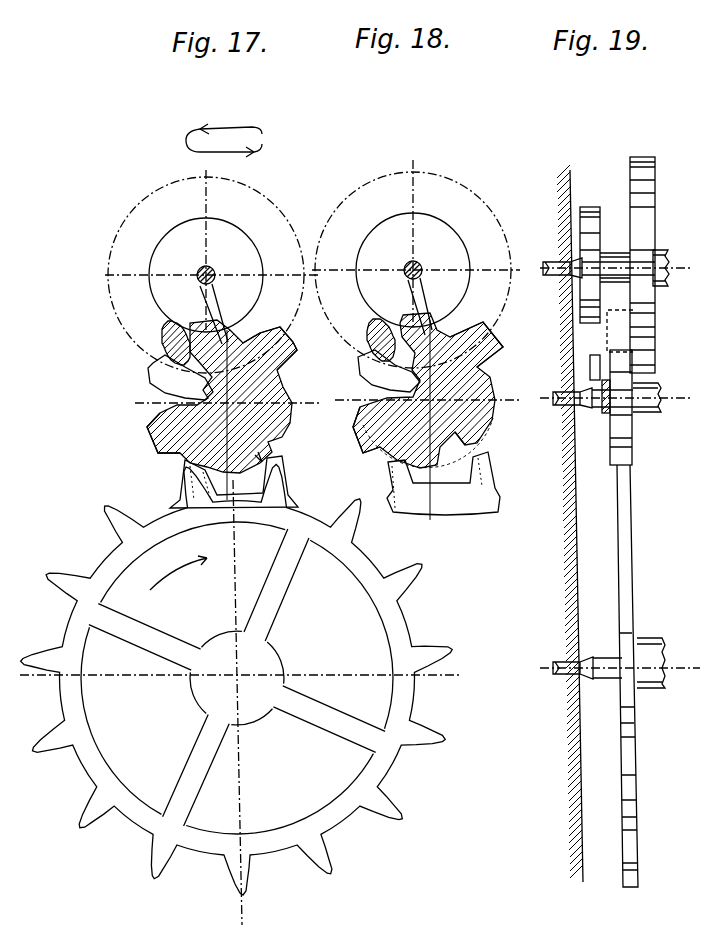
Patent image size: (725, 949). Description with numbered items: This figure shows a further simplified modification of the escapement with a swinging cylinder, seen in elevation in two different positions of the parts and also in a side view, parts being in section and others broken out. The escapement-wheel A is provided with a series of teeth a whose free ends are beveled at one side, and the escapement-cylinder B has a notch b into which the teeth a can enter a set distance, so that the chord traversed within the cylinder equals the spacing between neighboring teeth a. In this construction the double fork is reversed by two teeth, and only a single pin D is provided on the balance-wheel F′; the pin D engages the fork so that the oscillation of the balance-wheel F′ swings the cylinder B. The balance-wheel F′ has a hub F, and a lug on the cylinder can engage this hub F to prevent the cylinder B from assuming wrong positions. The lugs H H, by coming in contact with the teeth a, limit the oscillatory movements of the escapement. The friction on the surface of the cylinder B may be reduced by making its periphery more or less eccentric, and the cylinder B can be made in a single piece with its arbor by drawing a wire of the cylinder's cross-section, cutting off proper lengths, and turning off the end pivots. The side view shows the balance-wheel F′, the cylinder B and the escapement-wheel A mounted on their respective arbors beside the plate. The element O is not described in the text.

In FIG. 17, the escapement-wheel A is at (241, 695).
In FIG. 19, the escapement-wheel A is at (620, 676).
In FIG. 17, the teeth a is at (210, 498).
In FIG. 18, the teeth a is at (443, 483).
In FIG. 17, the escapement-cylinder B is at (227, 410).
In FIG. 18, the escapement-cylinder B is at (427, 416).
In FIG. 19, the escapement-cylinder B is at (615, 407).
In FIG. 17, the notch b is at (256, 468).
In FIG. 18, the notch b is at (457, 445).
In FIG. 17, the pin D is at (165, 343).
In FIG. 18, the pin D is at (373, 335).
In FIG. 19, the pin D is at (620, 331).
In FIG. 17, the hub F is at (211, 271).
In FIG. 18, the hub F is at (416, 264).
In FIG. 19, the balance-wheel F′ is at (615, 265).
In FIG. 17, the lugs H is at (229, 403).
In FIG. 18, the lugs H is at (429, 391).
In FIG. 17, the lever O is at (180, 377).
In FIG. 18, the lever O is at (389, 371).
In FIG. 19, the lever O is at (592, 375).